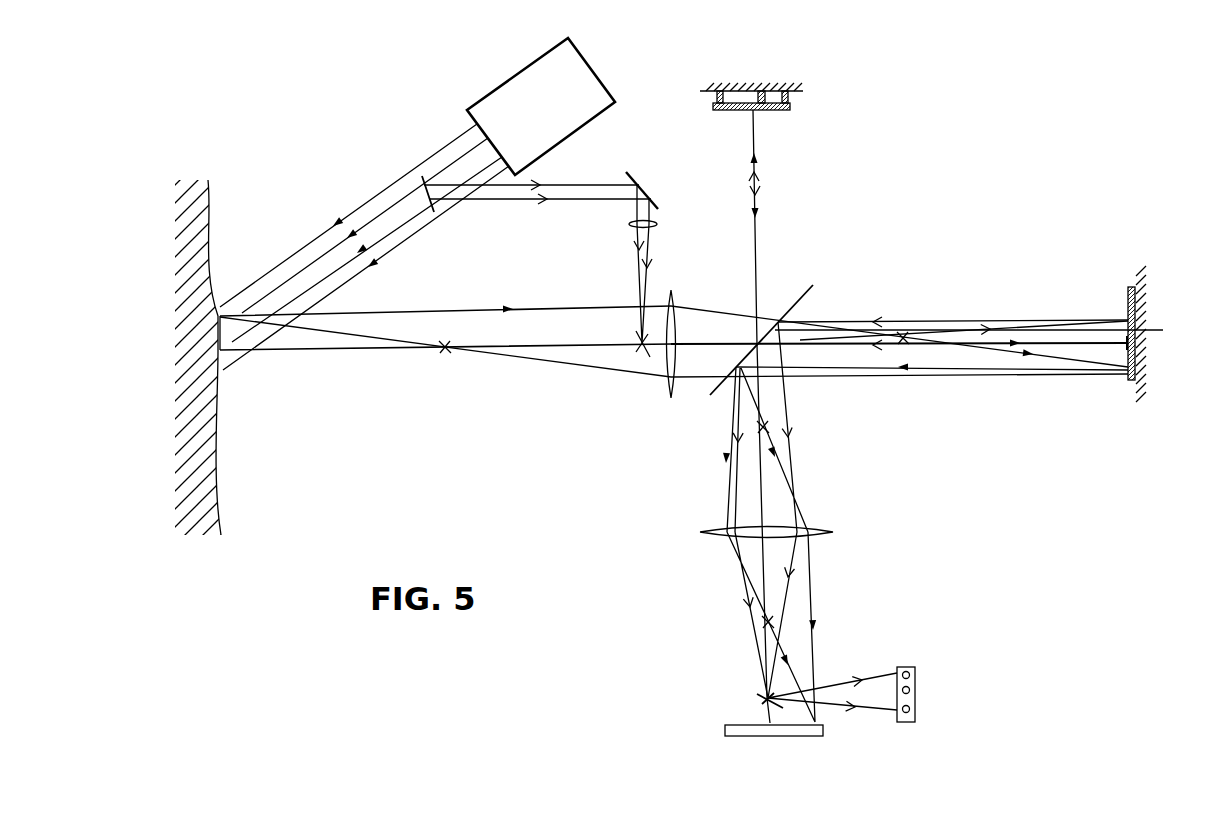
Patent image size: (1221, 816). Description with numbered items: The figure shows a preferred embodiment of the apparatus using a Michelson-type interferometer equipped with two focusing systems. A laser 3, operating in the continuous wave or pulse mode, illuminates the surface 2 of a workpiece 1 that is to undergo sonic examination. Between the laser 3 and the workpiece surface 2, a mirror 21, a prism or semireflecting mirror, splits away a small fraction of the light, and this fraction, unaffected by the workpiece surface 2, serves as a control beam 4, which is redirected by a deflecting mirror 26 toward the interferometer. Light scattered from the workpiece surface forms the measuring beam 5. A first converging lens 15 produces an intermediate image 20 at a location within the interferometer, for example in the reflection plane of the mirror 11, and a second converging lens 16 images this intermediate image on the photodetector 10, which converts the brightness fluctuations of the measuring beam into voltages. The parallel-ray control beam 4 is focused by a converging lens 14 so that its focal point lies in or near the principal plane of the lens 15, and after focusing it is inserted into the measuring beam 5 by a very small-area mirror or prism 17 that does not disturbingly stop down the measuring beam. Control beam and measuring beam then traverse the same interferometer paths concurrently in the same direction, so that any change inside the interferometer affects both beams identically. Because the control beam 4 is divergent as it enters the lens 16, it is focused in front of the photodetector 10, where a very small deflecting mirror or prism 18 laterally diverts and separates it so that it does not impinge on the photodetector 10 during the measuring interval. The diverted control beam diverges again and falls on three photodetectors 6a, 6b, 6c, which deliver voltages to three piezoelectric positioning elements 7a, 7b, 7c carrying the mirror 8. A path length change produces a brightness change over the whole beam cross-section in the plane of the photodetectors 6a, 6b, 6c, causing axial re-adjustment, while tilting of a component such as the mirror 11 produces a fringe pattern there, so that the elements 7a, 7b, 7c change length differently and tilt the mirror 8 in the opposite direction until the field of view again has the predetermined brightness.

The workpiece 1 is at (192, 188).
The surface 2 is at (218, 202).
The laser 3 is at (570, 77).
The control beam 4 is at (583, 187).
The measuring beam 5 is at (404, 323).
The photodetector 6a is at (915, 680).
The photodetector 6b is at (906, 690).
The photodetector 6c is at (906, 709).
The piezoelectric positioning element 7a is at (790, 98).
The piezoelectric positioning element 7b is at (761, 97).
The piezoelectric positioning element 7c is at (785, 97).
The mirror 8 is at (790, 106).
The photodetector 10 is at (728, 733).
The mirror 11 is at (1130, 287).
The converging lens 14 is at (628, 226).
The first converging lens 15 is at (675, 300).
The second converging lens 16 is at (716, 527).
The small-area mirror or prism 17 is at (640, 346).
The deflecting mirror or prism 18 is at (762, 698).
The intermediate image 20 is at (1128, 343).
The mirror 21 is at (424, 194).
The deflecting mirror 26 is at (636, 176).